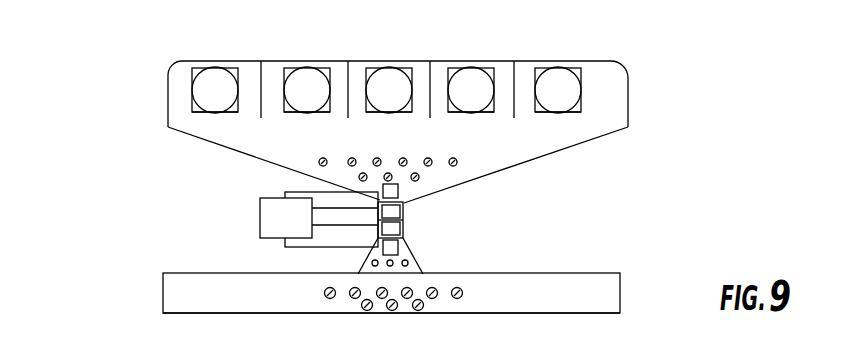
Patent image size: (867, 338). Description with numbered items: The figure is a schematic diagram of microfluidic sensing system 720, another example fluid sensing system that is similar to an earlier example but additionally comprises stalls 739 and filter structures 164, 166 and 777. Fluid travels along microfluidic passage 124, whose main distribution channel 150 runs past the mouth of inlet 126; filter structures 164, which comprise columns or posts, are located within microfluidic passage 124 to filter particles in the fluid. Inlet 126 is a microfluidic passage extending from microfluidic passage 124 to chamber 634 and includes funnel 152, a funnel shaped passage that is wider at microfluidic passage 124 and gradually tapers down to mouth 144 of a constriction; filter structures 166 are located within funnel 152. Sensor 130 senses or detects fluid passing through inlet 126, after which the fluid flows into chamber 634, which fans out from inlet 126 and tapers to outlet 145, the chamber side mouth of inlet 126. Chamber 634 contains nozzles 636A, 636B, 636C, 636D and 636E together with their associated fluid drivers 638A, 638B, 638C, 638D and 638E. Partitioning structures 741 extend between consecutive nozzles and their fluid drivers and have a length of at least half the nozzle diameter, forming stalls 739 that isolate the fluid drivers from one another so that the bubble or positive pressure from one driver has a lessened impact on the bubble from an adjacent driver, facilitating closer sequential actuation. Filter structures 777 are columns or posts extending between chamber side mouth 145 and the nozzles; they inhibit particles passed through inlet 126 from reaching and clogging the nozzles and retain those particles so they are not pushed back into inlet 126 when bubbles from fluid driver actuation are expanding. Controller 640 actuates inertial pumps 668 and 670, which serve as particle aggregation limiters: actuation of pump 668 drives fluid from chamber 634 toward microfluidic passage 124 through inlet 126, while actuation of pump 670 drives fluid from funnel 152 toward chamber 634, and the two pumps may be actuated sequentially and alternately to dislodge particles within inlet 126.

The microfluidic sensing system 720 is at (118, 70).
The chamber 634 is at (628, 93).
The nozzle 636A is at (213, 67).
The nozzle 636B is at (310, 66).
The nozzle 636C is at (413, 44).
The nozzle 636D is at (473, 63).
The nozzle 636E is at (560, 63).
The fluid driver 638A is at (236, 112).
The fluid driver 638B is at (313, 113).
The fluid driver 638C is at (400, 113).
The fluid driver 638D is at (484, 113).
The fluid driver 638E is at (575, 112).
The stall 739 is at (182, 82).
The partitioning structure 741 is at (263, 114).
The filter structure 777 is at (420, 176).
The inertial pump 668 is at (384, 186).
The controller 640 is at (260, 228).
The mouth 144 is at (378, 238).
The outlet 145 is at (405, 203).
The inlet 126 is at (405, 223).
The sensor 130 is at (416, 212).
The inertial pump 670 is at (405, 252).
The funnel 152 is at (358, 270).
The filter structure 166 is at (410, 262).
The microfluidic passage 124 is at (594, 262).
The main distribution channel 150 is at (608, 322).
The filter structure 164 is at (463, 293).